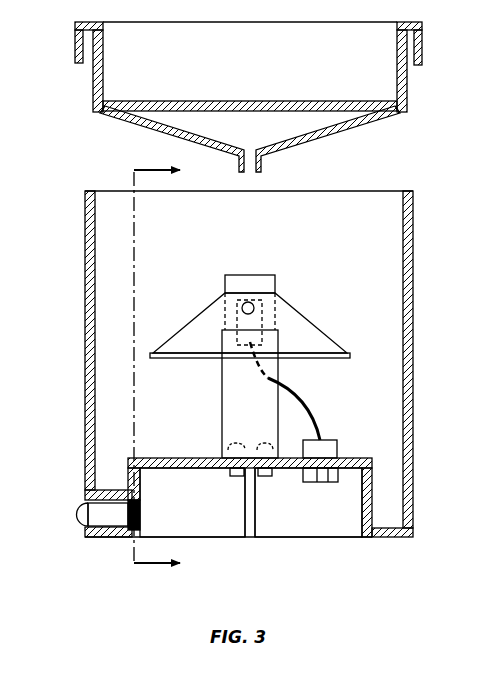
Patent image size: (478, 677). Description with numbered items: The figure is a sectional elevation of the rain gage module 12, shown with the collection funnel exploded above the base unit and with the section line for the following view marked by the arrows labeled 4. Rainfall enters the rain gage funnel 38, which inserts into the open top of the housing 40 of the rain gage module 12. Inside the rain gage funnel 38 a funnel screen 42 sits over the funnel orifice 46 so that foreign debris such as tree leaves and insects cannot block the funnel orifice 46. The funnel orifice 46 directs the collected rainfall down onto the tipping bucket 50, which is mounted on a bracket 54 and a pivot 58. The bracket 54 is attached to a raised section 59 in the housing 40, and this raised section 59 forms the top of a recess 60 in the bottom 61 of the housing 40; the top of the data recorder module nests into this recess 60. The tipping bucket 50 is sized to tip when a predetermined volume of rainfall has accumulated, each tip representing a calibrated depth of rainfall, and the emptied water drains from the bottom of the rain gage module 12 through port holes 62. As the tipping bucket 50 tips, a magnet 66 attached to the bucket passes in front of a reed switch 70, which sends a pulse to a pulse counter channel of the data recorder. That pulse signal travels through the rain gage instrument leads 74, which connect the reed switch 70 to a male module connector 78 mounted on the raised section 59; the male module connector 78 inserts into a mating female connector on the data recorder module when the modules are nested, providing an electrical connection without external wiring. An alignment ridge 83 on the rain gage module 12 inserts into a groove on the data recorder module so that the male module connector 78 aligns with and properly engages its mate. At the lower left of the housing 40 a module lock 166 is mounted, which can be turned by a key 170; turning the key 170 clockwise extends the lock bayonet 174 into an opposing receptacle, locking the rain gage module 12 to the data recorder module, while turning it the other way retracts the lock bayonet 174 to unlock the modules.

The rain gage module 12 is at (366, 188).
The rain gage funnel 38 is at (263, 74).
The funnel screen 42 is at (305, 103).
The funnel orifice 46 is at (249, 172).
The housing 40 is at (413, 343).
The section line 4- 4 is at (168, 370).
The tipping bucket 50 is at (298, 332).
The magnet 66 is at (261, 302).
The reed switch 70 is at (243, 323).
The pivot 58 is at (258, 342).
The bracket 54 is at (263, 419).
The rain gage instrument leads 74 is at (310, 405).
The male module connector 78 is at (325, 447).
The raised section 59 is at (187, 470).
The recess 60 is at (365, 513).
The alignment ridge 83 is at (252, 518).
The port holes 62 is at (410, 520).
The bottom 61 is at (380, 535).
The key 170 is at (82, 514).
The lock bayonet 174 is at (140, 512).
The module lock 166 is at (115, 517).